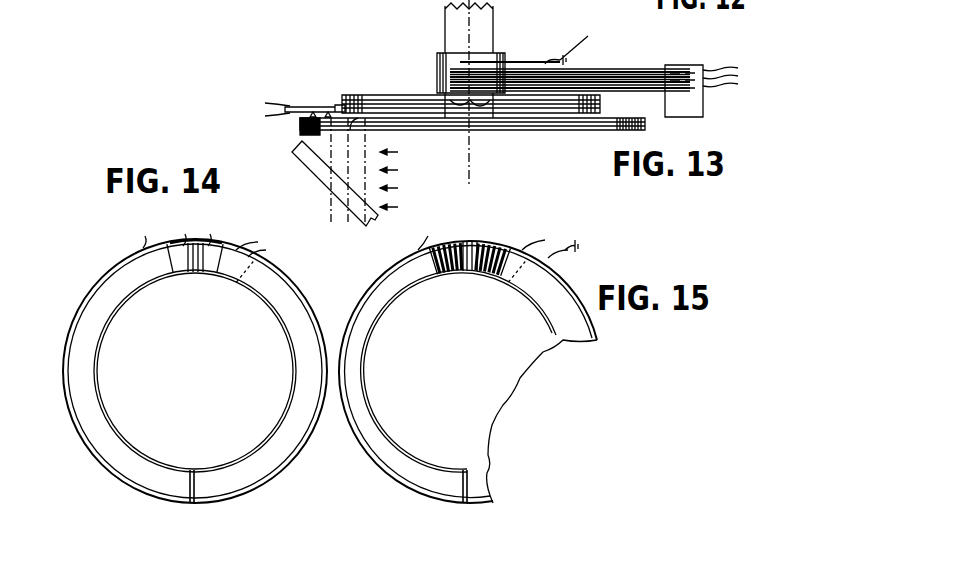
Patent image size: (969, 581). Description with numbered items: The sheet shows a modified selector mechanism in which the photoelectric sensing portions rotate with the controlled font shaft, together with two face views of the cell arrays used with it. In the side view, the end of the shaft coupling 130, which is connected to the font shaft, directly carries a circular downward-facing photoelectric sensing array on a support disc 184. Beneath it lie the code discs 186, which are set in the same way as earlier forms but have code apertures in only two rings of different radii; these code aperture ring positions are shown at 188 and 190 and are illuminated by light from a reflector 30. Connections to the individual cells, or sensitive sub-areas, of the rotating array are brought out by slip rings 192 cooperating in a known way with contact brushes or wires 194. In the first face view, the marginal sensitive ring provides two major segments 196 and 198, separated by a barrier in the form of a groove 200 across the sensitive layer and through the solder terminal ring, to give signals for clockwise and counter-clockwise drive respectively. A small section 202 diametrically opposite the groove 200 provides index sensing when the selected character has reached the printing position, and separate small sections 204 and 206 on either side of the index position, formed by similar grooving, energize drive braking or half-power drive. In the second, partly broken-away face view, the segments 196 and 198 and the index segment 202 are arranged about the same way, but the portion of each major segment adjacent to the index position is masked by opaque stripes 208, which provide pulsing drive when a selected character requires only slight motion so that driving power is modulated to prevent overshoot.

In FIG. 13, the shaft coupling 130 is at (492, 14).
In FIG. 13, the slip rings 192 is at (440, 79).
In FIG. 13, the contact brushes or wires 194 is at (584, 92).
In FIG. 13, the support disc 184 is at (415, 100).
In FIG. 13, the code discs 186 is at (497, 126).
In FIG. 13, the code aperture ring position 190 is at (320, 126).
In FIG. 13, the code aperture ring position 188 is at (362, 134).
In FIG. 13, the reflector 30 is at (333, 190).
In FIG. 14, the major segment 196 is at (94, 322).
In FIG. 15, the major segment 196 is at (366, 323).
In FIG. 14, the major segment 198 is at (300, 322).
In FIG. 15, the major segment 198 is at (568, 313).
In FIG. 14, the groove 200 is at (197, 484).
In FIG. 15, the groove 200 is at (458, 480).
In FIG. 14, the index segment 202 is at (197, 258).
In FIG. 15, the index segment 202 is at (470, 262).
In FIG. 14, the small section 204 is at (172, 248).
In FIG. 14, the small section 206 is at (200, 248).
In FIG. 15, the opaque stripes 208 is at (496, 252).